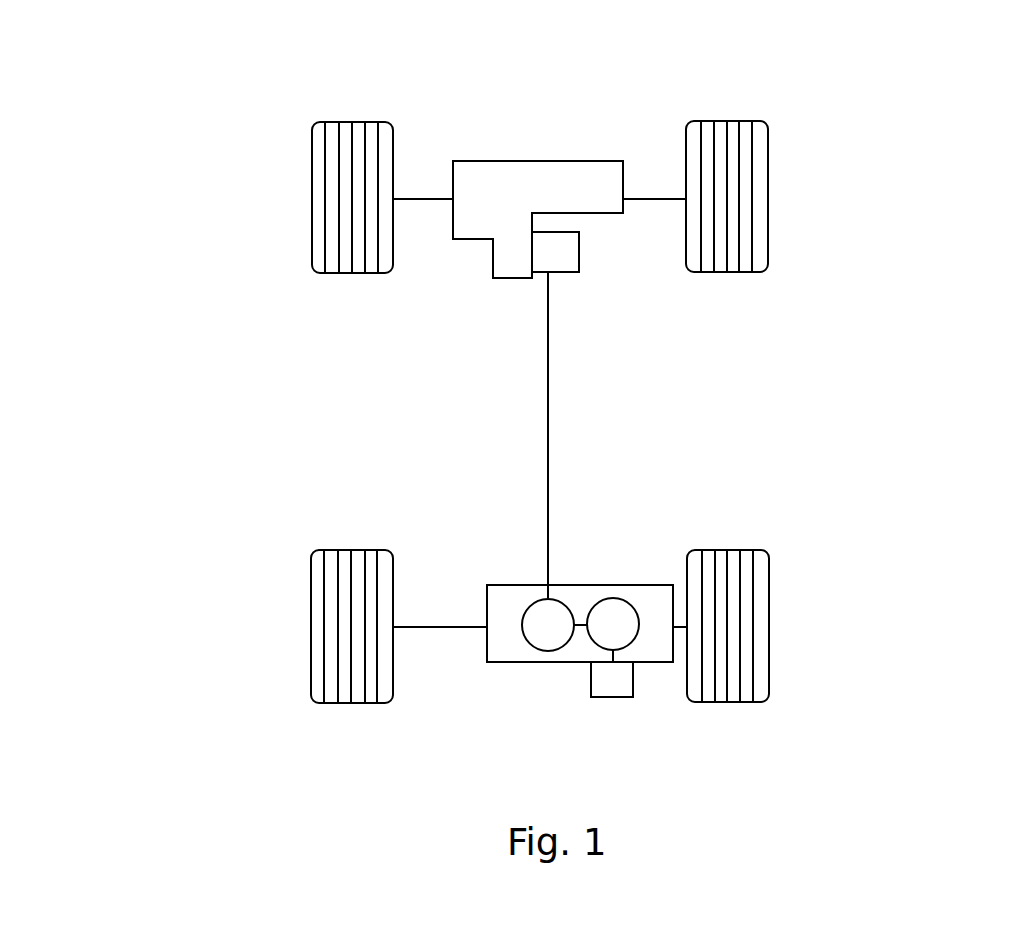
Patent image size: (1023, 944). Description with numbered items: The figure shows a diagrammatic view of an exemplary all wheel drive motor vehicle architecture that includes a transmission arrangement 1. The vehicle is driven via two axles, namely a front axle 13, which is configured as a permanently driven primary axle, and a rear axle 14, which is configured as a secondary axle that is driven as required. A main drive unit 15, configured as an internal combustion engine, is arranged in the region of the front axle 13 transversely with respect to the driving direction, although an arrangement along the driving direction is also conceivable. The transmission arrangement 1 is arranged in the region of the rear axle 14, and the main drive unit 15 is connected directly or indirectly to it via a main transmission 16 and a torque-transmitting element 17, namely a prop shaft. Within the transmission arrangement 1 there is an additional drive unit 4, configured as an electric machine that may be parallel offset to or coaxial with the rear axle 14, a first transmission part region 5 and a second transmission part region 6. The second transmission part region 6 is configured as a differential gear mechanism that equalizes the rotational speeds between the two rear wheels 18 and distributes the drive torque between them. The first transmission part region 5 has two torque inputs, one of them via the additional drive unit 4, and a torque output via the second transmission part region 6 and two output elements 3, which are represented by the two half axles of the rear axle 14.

The transmission arrangement 1 is at (620, 572).
The output elements 3 is at (462, 628).
The additional drive unit 4 is at (618, 672).
The first transmission part region 5 is at (547, 622).
The second transmission part region 6 is at (613, 625).
The front axle 13 is at (787, 203).
The rear axle 14 is at (778, 623).
The main drive unit 15 is at (513, 204).
The main transmission 16 is at (555, 259).
The torque-transmitting element 17 is at (549, 470).
The rear wheels 18 is at (350, 623).